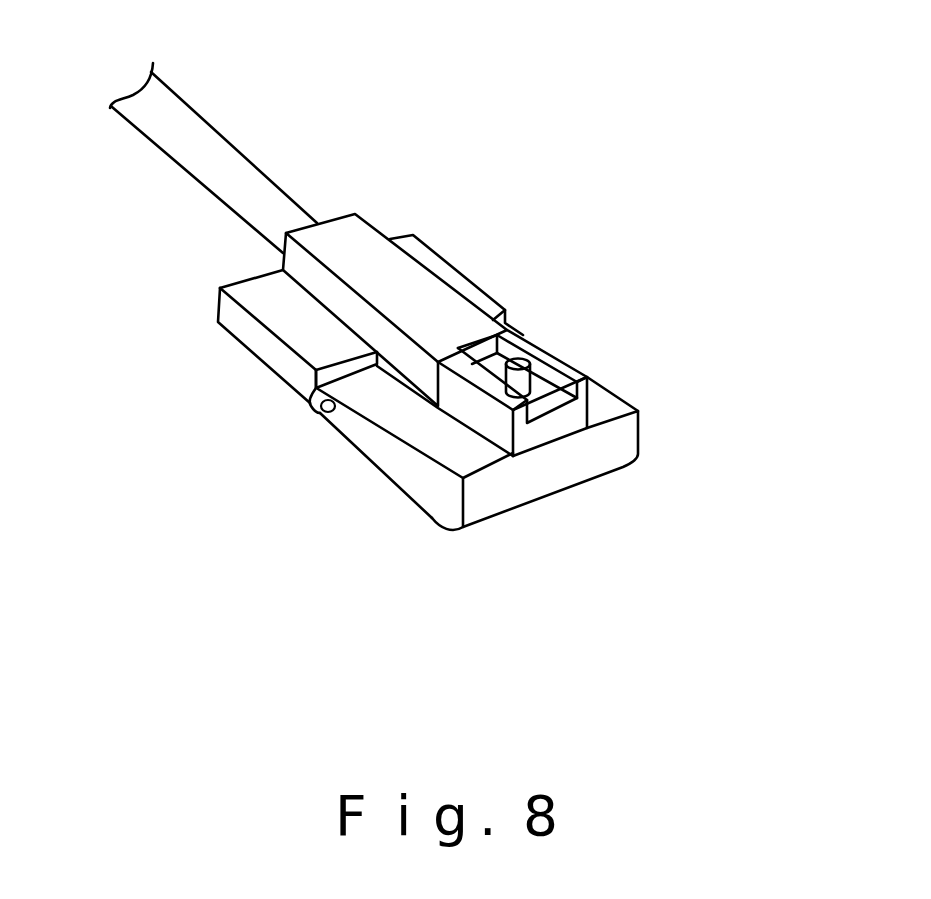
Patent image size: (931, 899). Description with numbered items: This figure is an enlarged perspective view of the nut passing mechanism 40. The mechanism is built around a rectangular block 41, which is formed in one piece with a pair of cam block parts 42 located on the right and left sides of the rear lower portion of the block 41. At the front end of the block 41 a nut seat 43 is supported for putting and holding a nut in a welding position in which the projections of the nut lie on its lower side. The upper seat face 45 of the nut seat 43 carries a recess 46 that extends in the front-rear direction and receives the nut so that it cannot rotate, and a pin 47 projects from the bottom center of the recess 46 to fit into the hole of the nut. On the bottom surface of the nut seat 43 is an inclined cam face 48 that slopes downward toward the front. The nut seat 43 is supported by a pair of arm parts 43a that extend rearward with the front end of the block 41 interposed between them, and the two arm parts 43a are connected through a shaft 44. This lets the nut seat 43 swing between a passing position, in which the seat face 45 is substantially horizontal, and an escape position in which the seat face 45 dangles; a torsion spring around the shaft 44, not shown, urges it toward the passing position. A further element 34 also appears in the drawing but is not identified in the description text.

The optical fiber 34 is at (148, 138).
The nut passing mechanism 40 is at (436, 160).
The rectangular block 41 is at (437, 298).
The cam block parts 42 is at (427, 245).
The nut seat 43 is at (428, 516).
The arm parts 43a is at (507, 330).
The shaft 44 is at (320, 410).
The seat face 45 is at (779, 369).
The recess 46 is at (547, 405).
The pin 47 is at (541, 365).
The inclined cam face 48 is at (386, 478).